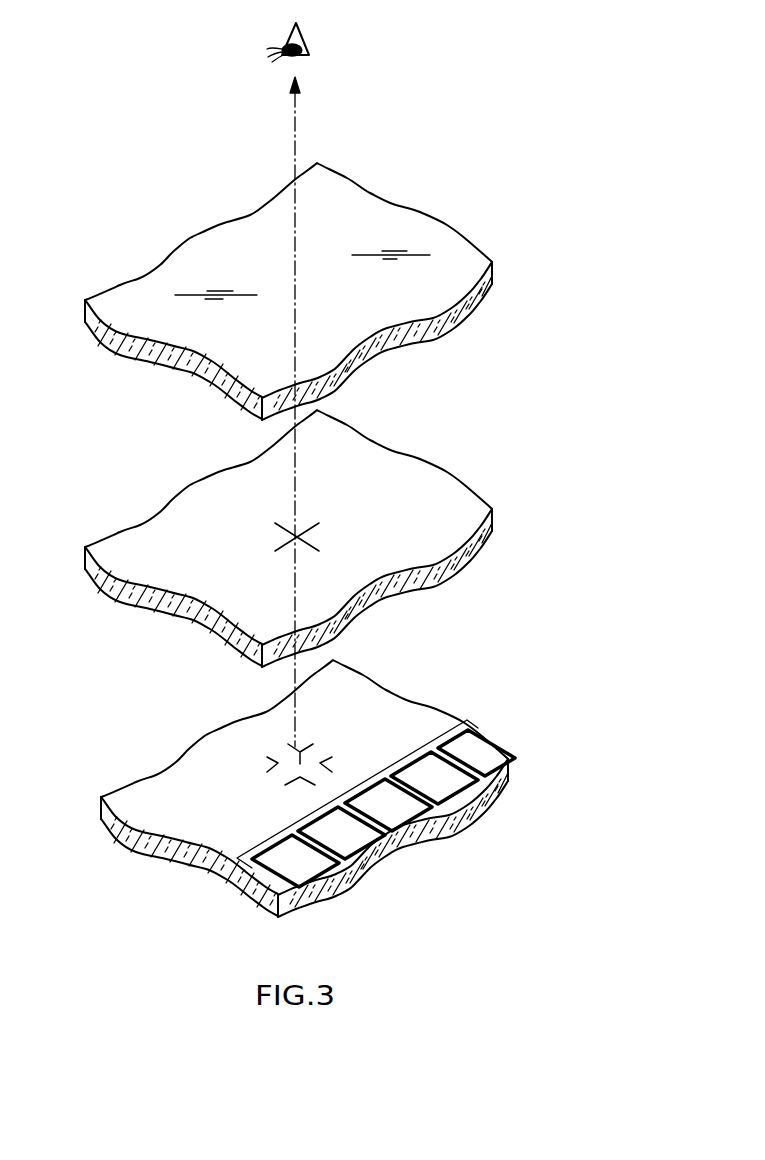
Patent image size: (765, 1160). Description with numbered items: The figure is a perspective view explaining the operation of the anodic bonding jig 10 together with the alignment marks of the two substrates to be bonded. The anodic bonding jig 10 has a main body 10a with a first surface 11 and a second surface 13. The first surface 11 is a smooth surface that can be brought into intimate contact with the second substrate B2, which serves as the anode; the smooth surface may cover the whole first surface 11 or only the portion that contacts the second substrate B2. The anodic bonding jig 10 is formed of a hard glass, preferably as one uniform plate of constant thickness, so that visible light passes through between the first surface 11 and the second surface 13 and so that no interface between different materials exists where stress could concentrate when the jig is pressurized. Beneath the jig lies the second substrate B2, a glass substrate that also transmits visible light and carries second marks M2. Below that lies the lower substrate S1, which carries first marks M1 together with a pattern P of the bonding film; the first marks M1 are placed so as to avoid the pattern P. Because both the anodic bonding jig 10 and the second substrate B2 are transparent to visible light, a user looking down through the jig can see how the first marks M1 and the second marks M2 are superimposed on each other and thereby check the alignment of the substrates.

The anodic bonding jig 10 is at (497, 256).
The main body 10a is at (392, 216).
The second surface 13 is at (432, 297).
The first surface 11 is at (440, 327).
The second substrate B2 is at (422, 470).
The second marks M2 is at (325, 535).
The first substrate S1 is at (443, 722).
The first marks M1 is at (329, 746).
The pattern P is at (423, 795).